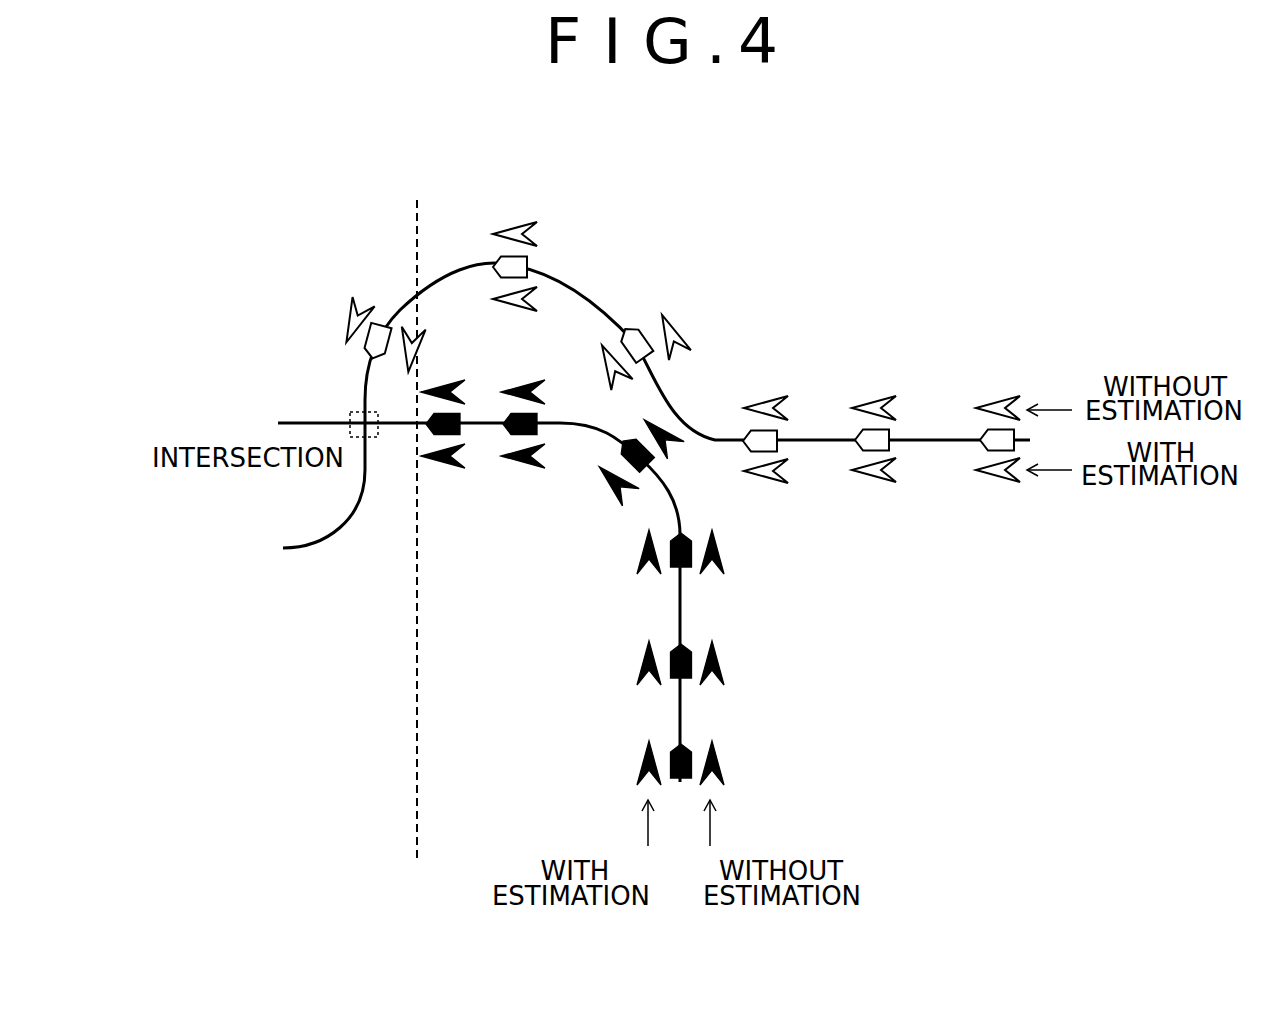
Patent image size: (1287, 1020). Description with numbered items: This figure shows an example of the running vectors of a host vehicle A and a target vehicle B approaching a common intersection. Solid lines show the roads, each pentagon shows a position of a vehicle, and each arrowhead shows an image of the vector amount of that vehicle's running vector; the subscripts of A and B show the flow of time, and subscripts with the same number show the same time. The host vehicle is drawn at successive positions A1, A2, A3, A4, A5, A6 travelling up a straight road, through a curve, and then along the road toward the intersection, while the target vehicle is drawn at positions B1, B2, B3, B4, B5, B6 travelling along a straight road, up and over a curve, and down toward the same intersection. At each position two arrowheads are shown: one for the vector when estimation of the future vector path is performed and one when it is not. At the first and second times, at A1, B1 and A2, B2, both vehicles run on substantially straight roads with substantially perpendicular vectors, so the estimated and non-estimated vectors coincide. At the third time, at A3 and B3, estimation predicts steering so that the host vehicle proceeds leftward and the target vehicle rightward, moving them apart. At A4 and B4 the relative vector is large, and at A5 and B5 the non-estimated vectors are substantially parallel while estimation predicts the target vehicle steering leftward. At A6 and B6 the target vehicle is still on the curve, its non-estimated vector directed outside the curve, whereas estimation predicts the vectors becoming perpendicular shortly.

The host vehicle A at time t1 A1 is at (656, 763).
The host vehicle A at time t2 A2 is at (656, 663).
The host vehicle A at time t3 A3 is at (656, 552).
The host vehicle A at time t4 A4 is at (634, 467).
The host vehicle A at time t5 A5 is at (523, 444).
The host vehicle A at time t6 A6 is at (444, 444).
The target vehicle B at time t1 B1 is at (998, 420).
The target vehicle B at time t2 B2 is at (874, 420).
The target vehicle B at time t3 B3 is at (765, 420).
The target vehicle B at time t4 B4 is at (655, 341).
The target vehicle B at time t5 B5 is at (513, 251).
The target vehicle B at time t6 B6 is at (380, 316).